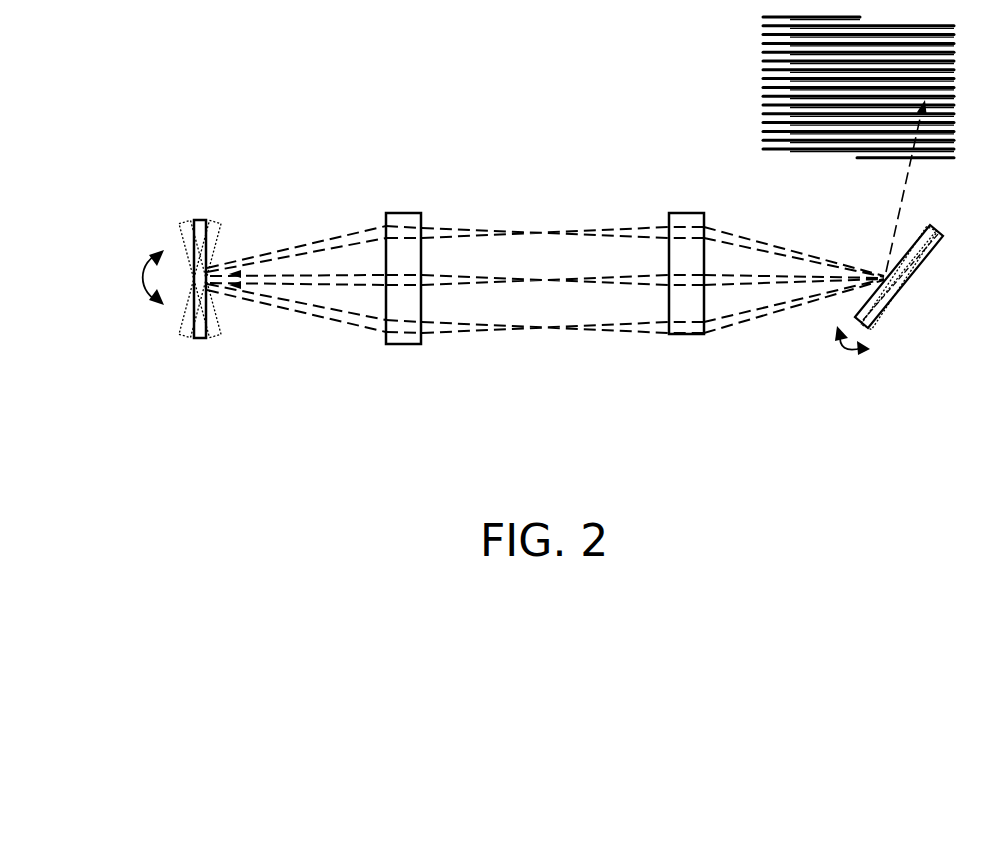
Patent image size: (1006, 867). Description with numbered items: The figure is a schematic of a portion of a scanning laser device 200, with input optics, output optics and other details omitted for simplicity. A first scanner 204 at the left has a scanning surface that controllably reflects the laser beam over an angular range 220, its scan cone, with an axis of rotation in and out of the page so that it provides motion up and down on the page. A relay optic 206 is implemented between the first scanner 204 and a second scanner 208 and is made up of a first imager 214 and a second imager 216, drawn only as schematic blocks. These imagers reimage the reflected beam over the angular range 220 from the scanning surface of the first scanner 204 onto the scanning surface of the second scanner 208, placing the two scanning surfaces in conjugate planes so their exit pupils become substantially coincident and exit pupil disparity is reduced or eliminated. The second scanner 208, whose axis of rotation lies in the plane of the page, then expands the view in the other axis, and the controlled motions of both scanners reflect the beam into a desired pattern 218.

The scanning laser device 200 is at (591, 434).
The first scanner 204 is at (200, 338).
The relay optic 206 is at (548, 184).
The second scanner 208 is at (902, 290).
The first imager 214 is at (400, 344).
The second imager 216 is at (685, 334).
The desired pattern 218 is at (762, 150).
The angular range 220 is at (212, 272).